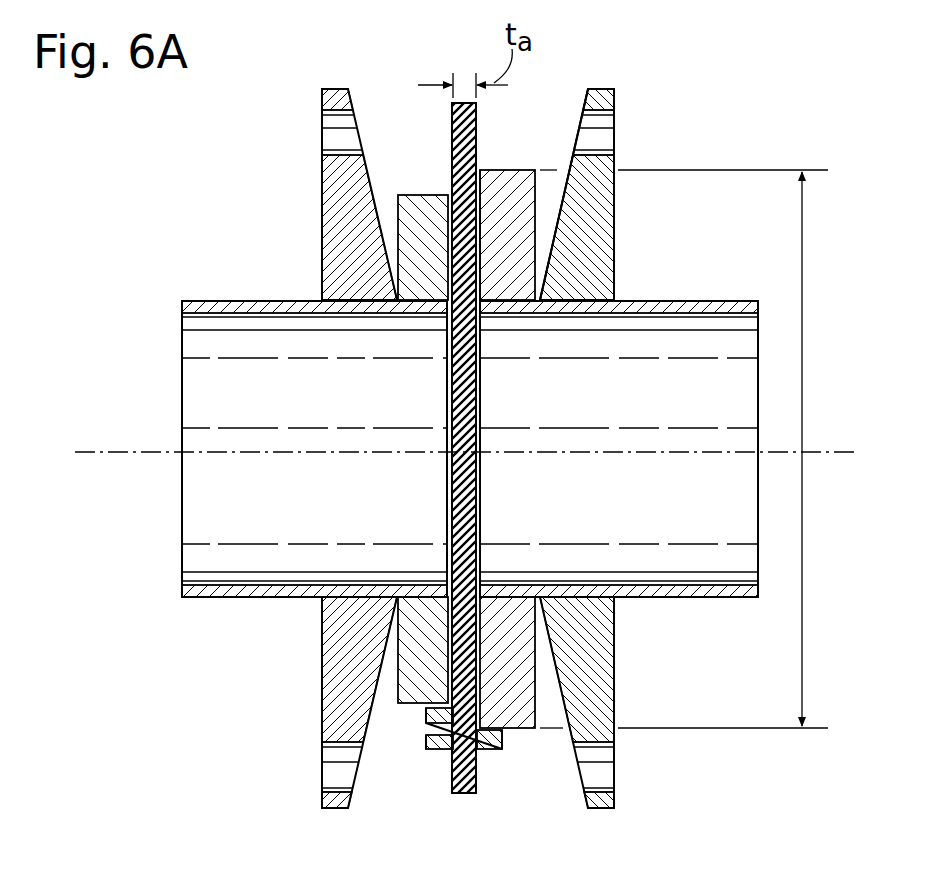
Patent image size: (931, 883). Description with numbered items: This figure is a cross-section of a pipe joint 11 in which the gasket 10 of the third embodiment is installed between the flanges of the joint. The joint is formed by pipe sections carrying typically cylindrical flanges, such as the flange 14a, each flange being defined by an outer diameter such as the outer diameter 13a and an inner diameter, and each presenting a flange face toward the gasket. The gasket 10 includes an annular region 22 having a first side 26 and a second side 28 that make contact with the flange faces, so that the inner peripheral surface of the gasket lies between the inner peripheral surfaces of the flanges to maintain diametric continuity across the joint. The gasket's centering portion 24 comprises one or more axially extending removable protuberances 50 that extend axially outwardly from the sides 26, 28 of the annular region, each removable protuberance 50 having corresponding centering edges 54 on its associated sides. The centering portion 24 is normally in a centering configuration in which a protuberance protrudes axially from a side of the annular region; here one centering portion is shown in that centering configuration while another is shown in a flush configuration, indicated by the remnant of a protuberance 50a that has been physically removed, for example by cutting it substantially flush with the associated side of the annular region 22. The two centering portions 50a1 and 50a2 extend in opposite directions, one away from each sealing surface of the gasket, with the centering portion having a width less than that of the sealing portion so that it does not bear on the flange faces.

The gasket 10 is at (392, 107).
The pipe joint 11 is at (650, 120).
The outer diameter 13a is at (803, 285).
The flange 14a is at (541, 172).
The annular region 22 is at (487, 230).
The centering portion 24 is at (530, 742).
The side 26 is at (481, 212).
The side 28 is at (451, 215).
The removable protuberance 50 is at (443, 735).
The remnant of removed protuberance 50a is at (491, 719).
The centering portion 50a1 is at (421, 749).
The centering portion 50a2 is at (500, 760).
The centering edge 54 is at (440, 699).